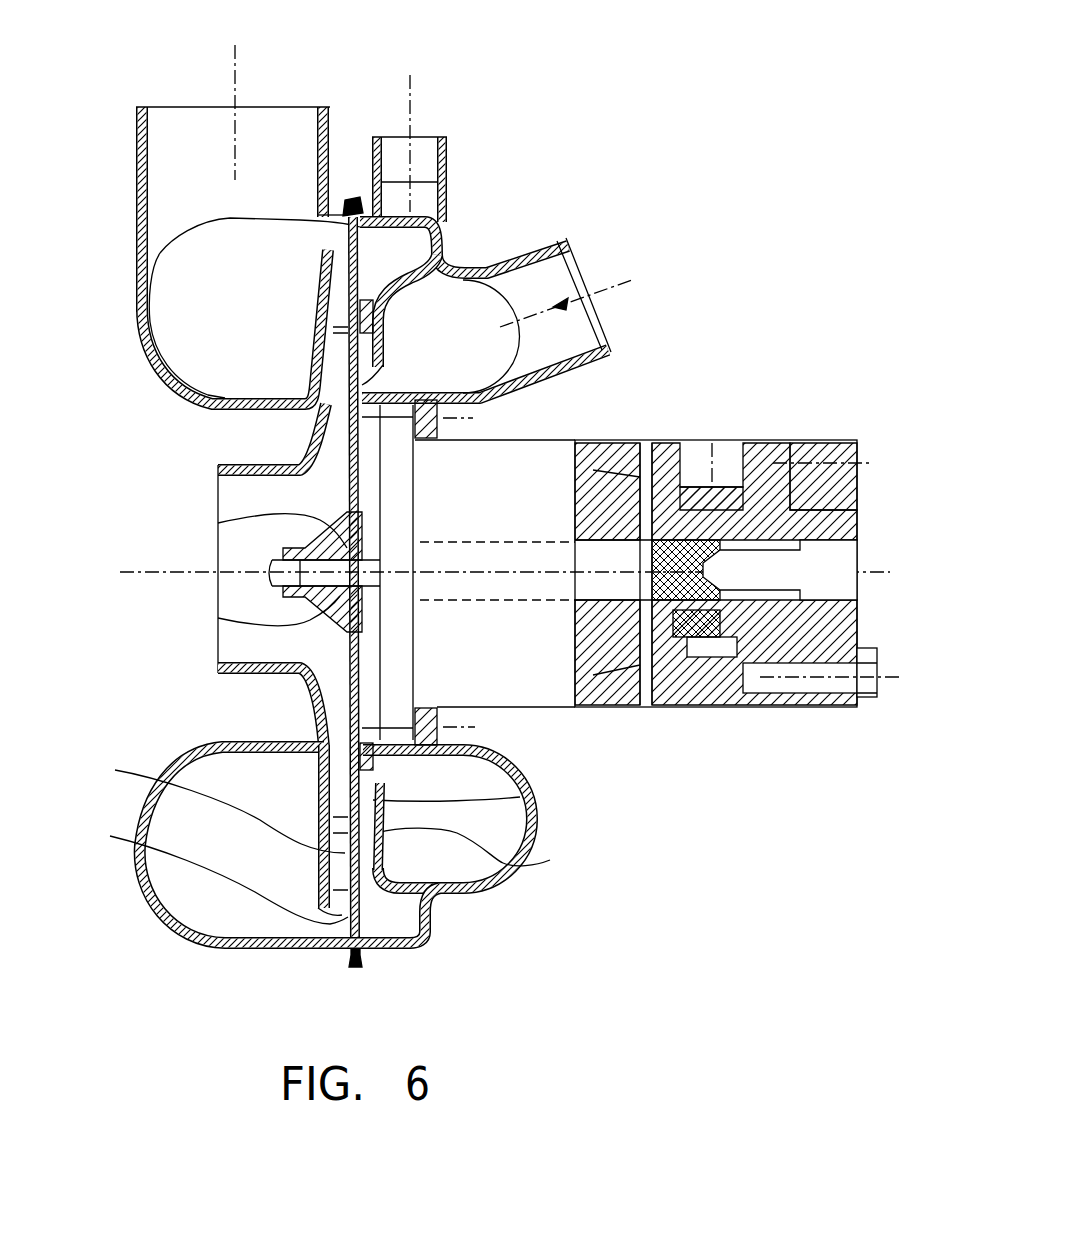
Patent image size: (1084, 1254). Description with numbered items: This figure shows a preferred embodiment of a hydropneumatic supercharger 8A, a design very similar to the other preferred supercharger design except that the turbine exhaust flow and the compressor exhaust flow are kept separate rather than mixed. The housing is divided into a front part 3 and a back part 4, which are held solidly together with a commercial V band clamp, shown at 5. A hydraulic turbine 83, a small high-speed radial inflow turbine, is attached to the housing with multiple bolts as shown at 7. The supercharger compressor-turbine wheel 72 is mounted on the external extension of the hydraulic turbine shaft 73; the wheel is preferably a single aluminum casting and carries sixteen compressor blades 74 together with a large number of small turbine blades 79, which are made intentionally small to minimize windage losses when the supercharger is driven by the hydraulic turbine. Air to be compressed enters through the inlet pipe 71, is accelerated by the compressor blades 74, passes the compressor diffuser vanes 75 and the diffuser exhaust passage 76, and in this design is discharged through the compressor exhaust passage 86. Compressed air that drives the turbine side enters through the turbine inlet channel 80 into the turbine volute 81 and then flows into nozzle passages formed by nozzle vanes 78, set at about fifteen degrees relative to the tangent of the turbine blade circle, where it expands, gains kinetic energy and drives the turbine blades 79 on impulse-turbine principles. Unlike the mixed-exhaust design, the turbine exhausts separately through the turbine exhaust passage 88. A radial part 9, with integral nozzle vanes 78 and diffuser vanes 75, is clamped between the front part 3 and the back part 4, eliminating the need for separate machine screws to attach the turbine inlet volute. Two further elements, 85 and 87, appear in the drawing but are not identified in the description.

The front part 3 is at (178, 926).
The back part 4 is at (425, 920).
The V band clamp 5 is at (350, 960).
The bolts 7 is at (488, 720).
The hydropneumatic supercharger 8A is at (533, 145).
The radial part 9 is at (360, 246).
The inlet pipe 71 is at (232, 490).
The supercharger compressor-turbine wheel 72 is at (300, 527).
The hydraulic turbine shaft 73 is at (300, 614).
The compressor blades 74 is at (330, 720).
The compressor diffuser vanes 75 is at (200, 799).
The diffuser exhaust passage 76 is at (199, 867).
The nozzle vanes 78 is at (550, 860).
The turbine blades 79 is at (520, 797).
The turbine inlet channel 80 is at (418, 140).
The turbine volute 81 is at (390, 253).
The hydraulic turbine 83 is at (716, 436).
The lower inlet chamber 85 is at (207, 896).
The compressor exhaust passage 86 is at (208, 140).
The guide vane 87 is at (447, 863).
The turbine exhaust passage 88 is at (560, 292).